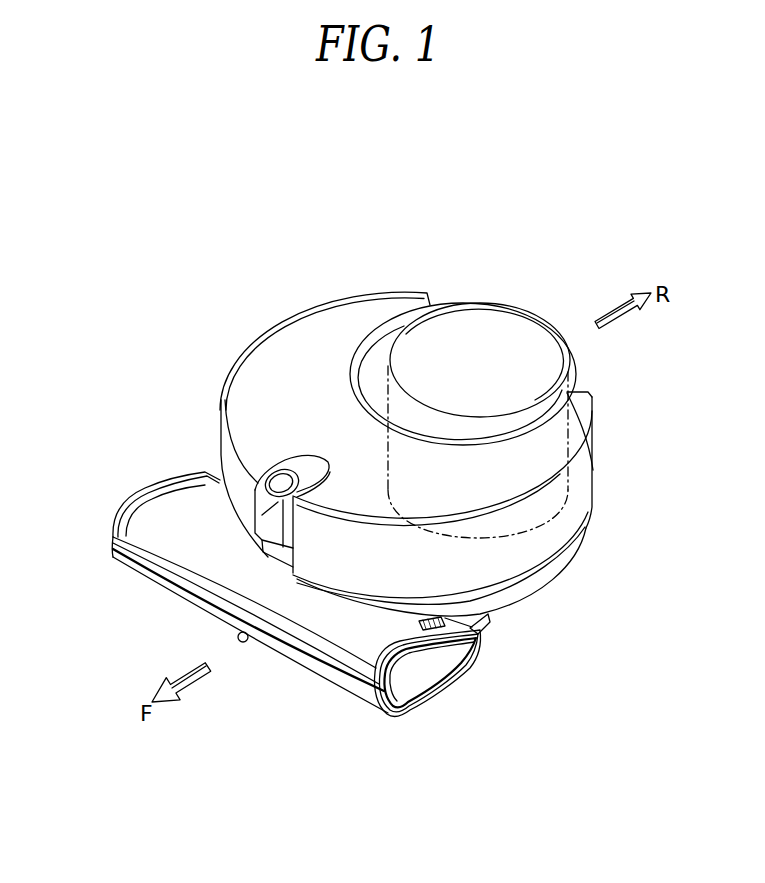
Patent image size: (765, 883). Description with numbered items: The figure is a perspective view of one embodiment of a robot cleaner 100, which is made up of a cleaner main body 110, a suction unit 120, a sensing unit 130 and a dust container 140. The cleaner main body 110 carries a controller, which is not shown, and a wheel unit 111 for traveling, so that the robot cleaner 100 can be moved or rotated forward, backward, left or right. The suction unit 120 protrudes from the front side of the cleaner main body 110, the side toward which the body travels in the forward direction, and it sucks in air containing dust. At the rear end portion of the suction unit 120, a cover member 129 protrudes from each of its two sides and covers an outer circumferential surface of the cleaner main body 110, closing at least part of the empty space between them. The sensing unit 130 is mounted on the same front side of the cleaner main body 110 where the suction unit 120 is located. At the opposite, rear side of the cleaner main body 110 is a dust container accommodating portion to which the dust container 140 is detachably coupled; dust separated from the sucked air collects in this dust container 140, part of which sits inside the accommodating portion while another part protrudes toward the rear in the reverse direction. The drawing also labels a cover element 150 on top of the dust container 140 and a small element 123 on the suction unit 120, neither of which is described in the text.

The robot cleaner 100 is at (252, 305).
The cleaner main body 110 is at (592, 473).
The wheel unit 111 is at (500, 617).
The suction unit 120 is at (163, 520).
The wheel of nozzle 123 is at (240, 636).
The cover member 129 is at (489, 622).
The sensing unit 130 is at (255, 490).
The dust container 140 is at (568, 413).
The dust container cover 150 is at (498, 330).